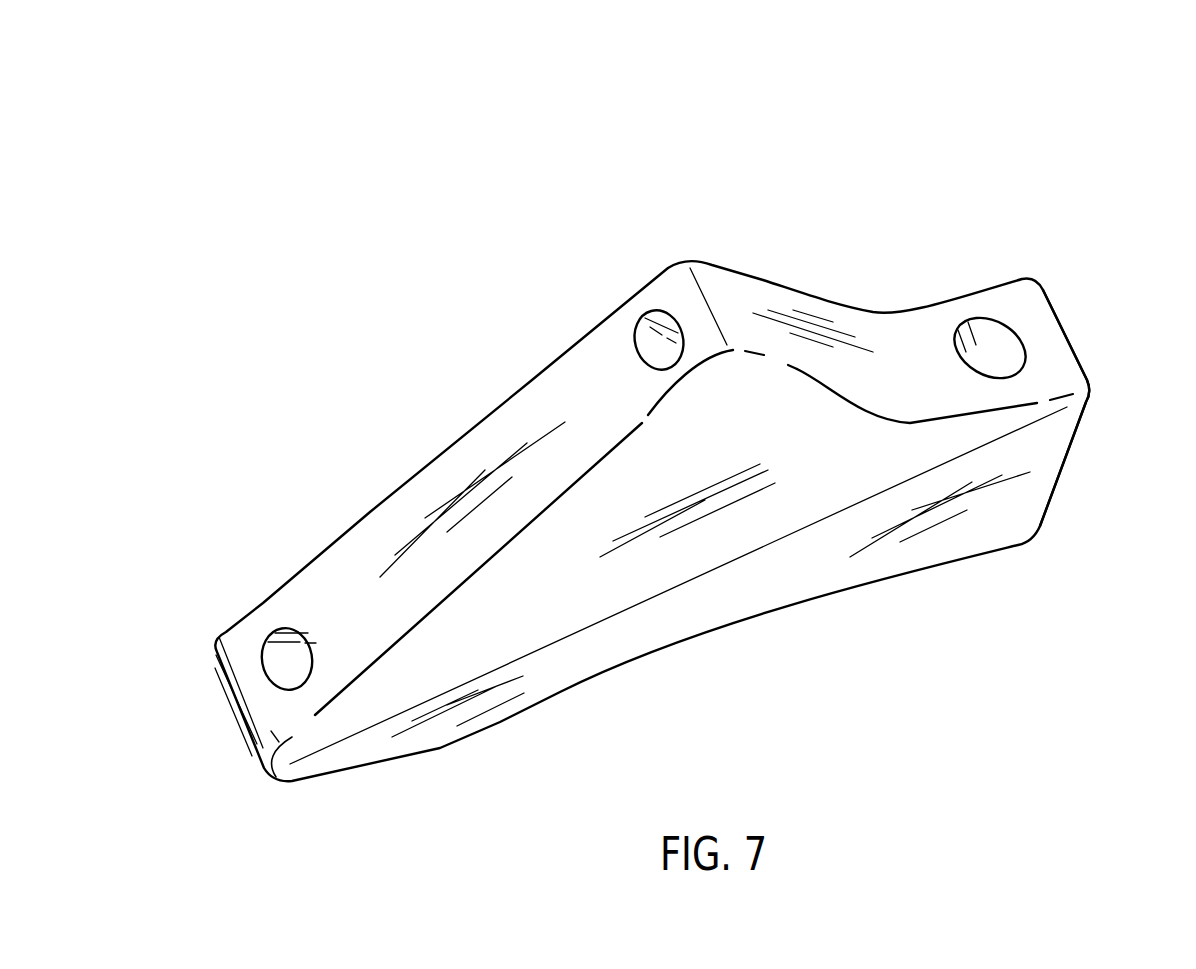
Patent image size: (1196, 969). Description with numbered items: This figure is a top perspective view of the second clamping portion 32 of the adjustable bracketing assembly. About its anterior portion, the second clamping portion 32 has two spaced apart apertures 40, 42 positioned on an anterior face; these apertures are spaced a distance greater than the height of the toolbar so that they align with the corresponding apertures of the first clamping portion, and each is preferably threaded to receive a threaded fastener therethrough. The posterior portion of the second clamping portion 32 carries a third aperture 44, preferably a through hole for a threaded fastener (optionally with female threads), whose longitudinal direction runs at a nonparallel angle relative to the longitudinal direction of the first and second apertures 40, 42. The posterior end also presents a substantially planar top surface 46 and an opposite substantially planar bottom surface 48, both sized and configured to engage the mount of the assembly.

The second clamping portion 32 is at (908, 149).
The spaced apart aperture 40 is at (292, 637).
The spaced apart aperture 42 is at (641, 328).
The third aperture 44 is at (999, 320).
The top surface 46 is at (1057, 370).
The bottom surface 48 is at (980, 553).